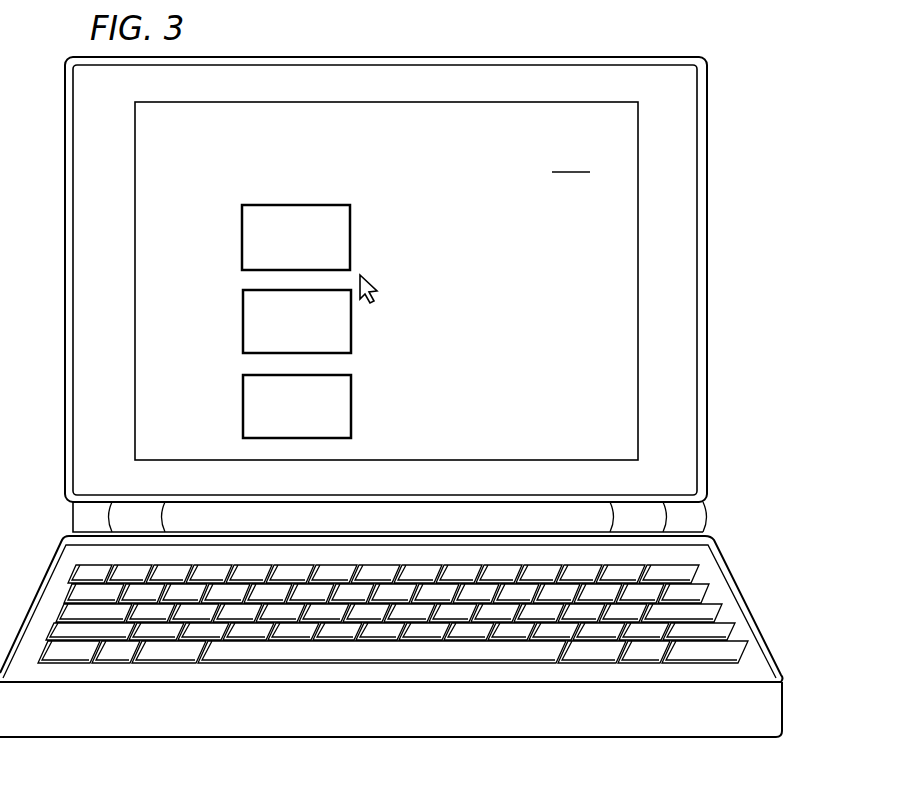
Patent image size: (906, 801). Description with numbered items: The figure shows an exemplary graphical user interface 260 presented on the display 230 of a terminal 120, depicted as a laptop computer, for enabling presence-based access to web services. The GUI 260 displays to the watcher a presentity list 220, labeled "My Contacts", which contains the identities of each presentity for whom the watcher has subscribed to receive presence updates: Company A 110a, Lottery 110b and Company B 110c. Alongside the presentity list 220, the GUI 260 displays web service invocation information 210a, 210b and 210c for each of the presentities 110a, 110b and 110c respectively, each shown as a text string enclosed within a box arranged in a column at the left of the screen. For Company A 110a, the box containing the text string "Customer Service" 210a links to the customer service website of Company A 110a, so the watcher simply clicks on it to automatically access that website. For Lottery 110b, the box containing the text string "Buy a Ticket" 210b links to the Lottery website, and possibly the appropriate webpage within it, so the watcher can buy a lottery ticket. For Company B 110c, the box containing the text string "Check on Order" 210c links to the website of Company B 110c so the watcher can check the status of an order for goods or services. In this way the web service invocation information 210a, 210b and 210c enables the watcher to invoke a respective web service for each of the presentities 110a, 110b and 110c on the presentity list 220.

The terminal 120 is at (747, 605).
The graphical user interface 260 is at (235, 184).
The presentity list 220 is at (432, 155).
The display 230 is at (571, 158).
The web service invocation information 210a is at (242, 237).
The web service invocation information 210b is at (243, 322).
The web service invocation information 210c is at (243, 408).
The presentity 110a is at (500, 240).
The presentity 110b is at (455, 325).
The presentity 110c is at (502, 407).